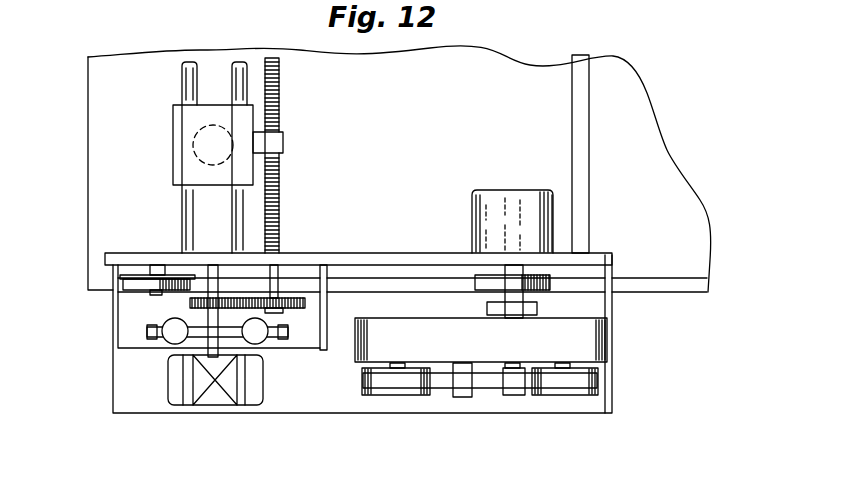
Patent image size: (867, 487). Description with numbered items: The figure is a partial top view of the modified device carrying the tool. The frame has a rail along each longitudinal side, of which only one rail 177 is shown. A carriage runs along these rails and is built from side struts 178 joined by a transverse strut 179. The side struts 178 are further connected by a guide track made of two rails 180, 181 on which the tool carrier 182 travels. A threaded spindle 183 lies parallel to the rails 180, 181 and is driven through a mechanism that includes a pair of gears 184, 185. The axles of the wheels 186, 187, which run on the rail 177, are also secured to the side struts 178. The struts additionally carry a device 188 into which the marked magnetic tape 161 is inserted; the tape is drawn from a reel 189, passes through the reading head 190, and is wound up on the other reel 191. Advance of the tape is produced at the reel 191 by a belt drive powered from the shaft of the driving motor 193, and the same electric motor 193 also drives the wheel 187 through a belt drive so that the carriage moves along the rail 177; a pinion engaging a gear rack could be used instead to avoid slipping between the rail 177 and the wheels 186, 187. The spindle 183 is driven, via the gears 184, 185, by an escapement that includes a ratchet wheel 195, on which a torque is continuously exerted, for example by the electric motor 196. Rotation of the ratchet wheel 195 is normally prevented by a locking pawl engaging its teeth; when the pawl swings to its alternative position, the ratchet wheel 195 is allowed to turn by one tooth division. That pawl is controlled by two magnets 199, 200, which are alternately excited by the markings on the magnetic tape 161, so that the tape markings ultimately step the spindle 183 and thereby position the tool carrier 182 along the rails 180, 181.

The magnetic tape 161 is at (440, 387).
The rail 177 is at (686, 287).
The side struts 178 is at (358, 258).
The transverse strut 179 is at (585, 172).
The rail 180 is at (185, 73).
The rail 181 is at (236, 214).
The tool carrier 182 is at (180, 118).
The threaded spindle 183 is at (279, 113).
The gear 184 is at (232, 310).
The gear 185 is at (303, 310).
The wheel 186 is at (137, 282).
The wheel 187 is at (490, 291).
The device 188 is at (606, 347).
The reel 189 is at (565, 398).
The reading head 190 is at (470, 397).
The reel 191 is at (400, 398).
The driving motor 193 is at (513, 200).
The ratchet wheel 195 is at (150, 333).
The electric motor 196 is at (178, 396).
The magnet 199 is at (170, 324).
The magnet 200 is at (258, 340).